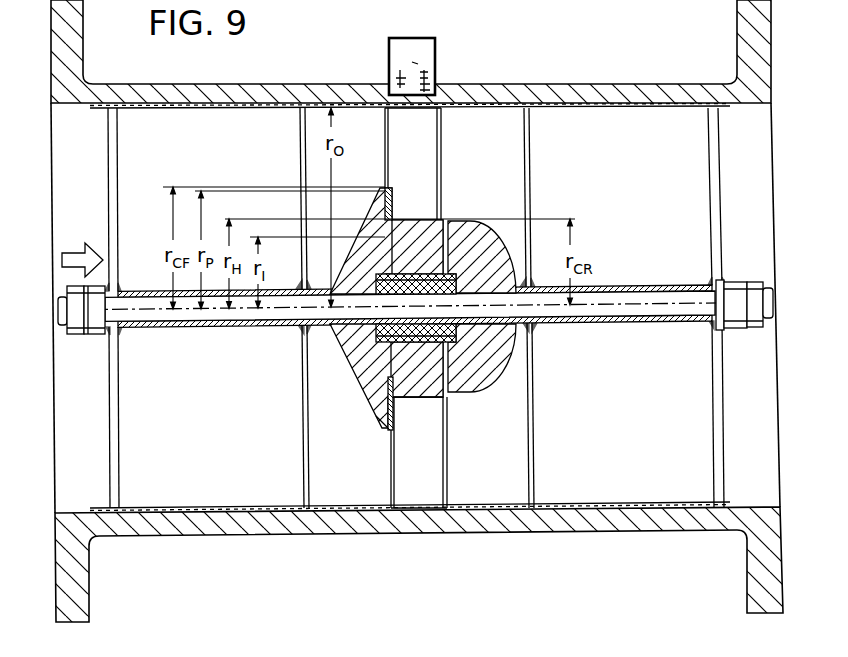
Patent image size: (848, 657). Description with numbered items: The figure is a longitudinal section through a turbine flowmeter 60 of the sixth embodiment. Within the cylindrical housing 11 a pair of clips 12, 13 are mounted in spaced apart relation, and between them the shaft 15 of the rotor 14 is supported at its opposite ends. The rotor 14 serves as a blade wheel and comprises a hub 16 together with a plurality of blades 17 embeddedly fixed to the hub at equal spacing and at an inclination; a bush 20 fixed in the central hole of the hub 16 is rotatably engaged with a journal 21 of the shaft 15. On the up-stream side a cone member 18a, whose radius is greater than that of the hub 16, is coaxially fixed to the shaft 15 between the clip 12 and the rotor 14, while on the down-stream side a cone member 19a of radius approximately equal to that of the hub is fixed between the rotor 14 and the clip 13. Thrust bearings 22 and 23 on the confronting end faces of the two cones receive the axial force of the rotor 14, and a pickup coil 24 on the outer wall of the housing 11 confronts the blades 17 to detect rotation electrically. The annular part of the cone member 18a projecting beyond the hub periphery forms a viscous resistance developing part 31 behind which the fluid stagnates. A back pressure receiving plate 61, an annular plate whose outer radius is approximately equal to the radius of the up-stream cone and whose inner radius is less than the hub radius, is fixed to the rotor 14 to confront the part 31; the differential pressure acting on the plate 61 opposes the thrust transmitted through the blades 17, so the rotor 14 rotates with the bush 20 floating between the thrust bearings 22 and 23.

The cylindrical housing 11 is at (585, 84).
The clip 12 is at (108, 224).
The clip 13 is at (719, 190).
The rotor 14 is at (443, 304).
The shaft 15 is at (163, 318).
The hub 16 is at (436, 398).
The blades 17 is at (434, 178).
The up-stream side cone member 18a is at (368, 387).
The down-stream side cone member 19a is at (487, 375).
The bush 20 is at (416, 268).
The journal 21 is at (413, 397).
The thrust bearing 22 is at (345, 337).
The thrust bearing 23 is at (460, 333).
The pickup coil 24 is at (436, 58).
The viscous resistance developing part 31 is at (378, 420).
The turbine flowmeter 60 is at (335, 63).
The back pressure receiving plate 61 is at (392, 190).